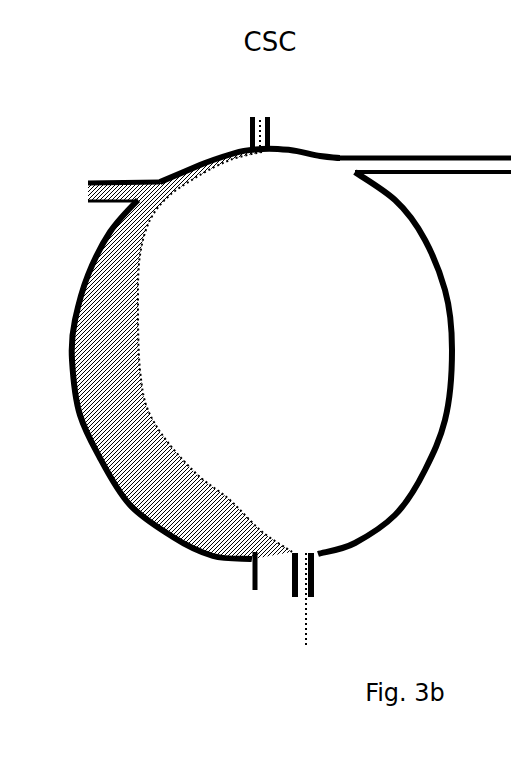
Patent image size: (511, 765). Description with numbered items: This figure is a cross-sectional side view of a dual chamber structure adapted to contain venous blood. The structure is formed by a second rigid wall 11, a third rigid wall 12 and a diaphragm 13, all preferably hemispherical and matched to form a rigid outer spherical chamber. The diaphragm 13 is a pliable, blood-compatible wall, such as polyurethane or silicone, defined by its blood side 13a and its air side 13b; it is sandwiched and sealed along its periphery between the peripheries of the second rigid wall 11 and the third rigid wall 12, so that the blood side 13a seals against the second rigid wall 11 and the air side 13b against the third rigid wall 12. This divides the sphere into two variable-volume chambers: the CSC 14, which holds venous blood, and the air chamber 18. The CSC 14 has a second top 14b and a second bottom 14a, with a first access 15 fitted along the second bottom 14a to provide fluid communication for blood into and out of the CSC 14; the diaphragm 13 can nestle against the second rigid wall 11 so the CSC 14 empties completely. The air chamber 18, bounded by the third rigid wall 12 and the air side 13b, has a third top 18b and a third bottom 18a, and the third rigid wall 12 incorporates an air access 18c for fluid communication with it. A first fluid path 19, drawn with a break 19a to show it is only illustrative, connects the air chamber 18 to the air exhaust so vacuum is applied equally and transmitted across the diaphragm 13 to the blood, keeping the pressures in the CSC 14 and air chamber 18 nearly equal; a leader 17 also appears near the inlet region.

The second rigid wall 11 is at (250, 134).
The third rigid wall 12 is at (272, 132).
The diaphragm 13 is at (258, 117).
The blood side 13a is at (200, 476).
The air side 13b is at (200, 477).
The CSC 14 is at (143, 467).
The second bottom 14a is at (252, 566).
The second top 14b is at (195, 160).
The first access 15 is at (252, 585).
The inlet channel 17 is at (100, 203).
The air chamber 18 is at (370, 320).
The third bottom 18a is at (318, 558).
The third top 18b is at (303, 150).
The air access 18c is at (340, 165).
The first fluid path 19 is at (455, 156).
The break 19a is at (433, 208).